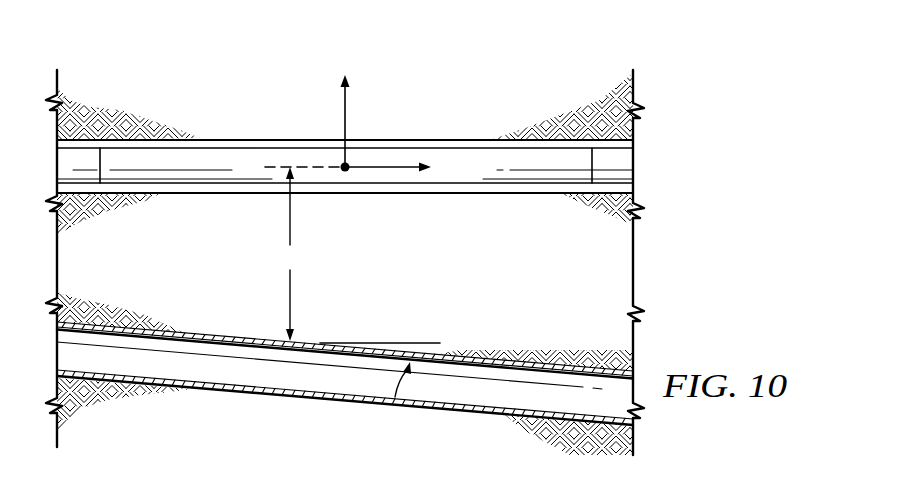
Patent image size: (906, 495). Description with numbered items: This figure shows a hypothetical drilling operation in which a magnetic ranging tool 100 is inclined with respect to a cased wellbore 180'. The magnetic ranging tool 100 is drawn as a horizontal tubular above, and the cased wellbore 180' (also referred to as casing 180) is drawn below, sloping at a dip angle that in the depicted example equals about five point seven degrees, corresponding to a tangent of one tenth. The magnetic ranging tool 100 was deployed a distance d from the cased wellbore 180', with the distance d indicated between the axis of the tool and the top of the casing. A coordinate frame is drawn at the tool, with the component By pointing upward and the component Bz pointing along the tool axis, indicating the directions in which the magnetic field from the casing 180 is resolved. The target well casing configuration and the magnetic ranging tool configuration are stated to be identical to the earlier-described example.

The magnetic ranging tool 100 is at (250, 147).
The cased wellbore 180' is at (345, 383).
The second wellbore casing (target well) 180 is at (345, 383).
The distance d is at (290, 254).
The magnetic field component along y axis By is at (331, 121).
The magnetic field component along z axis Bz is at (403, 169).